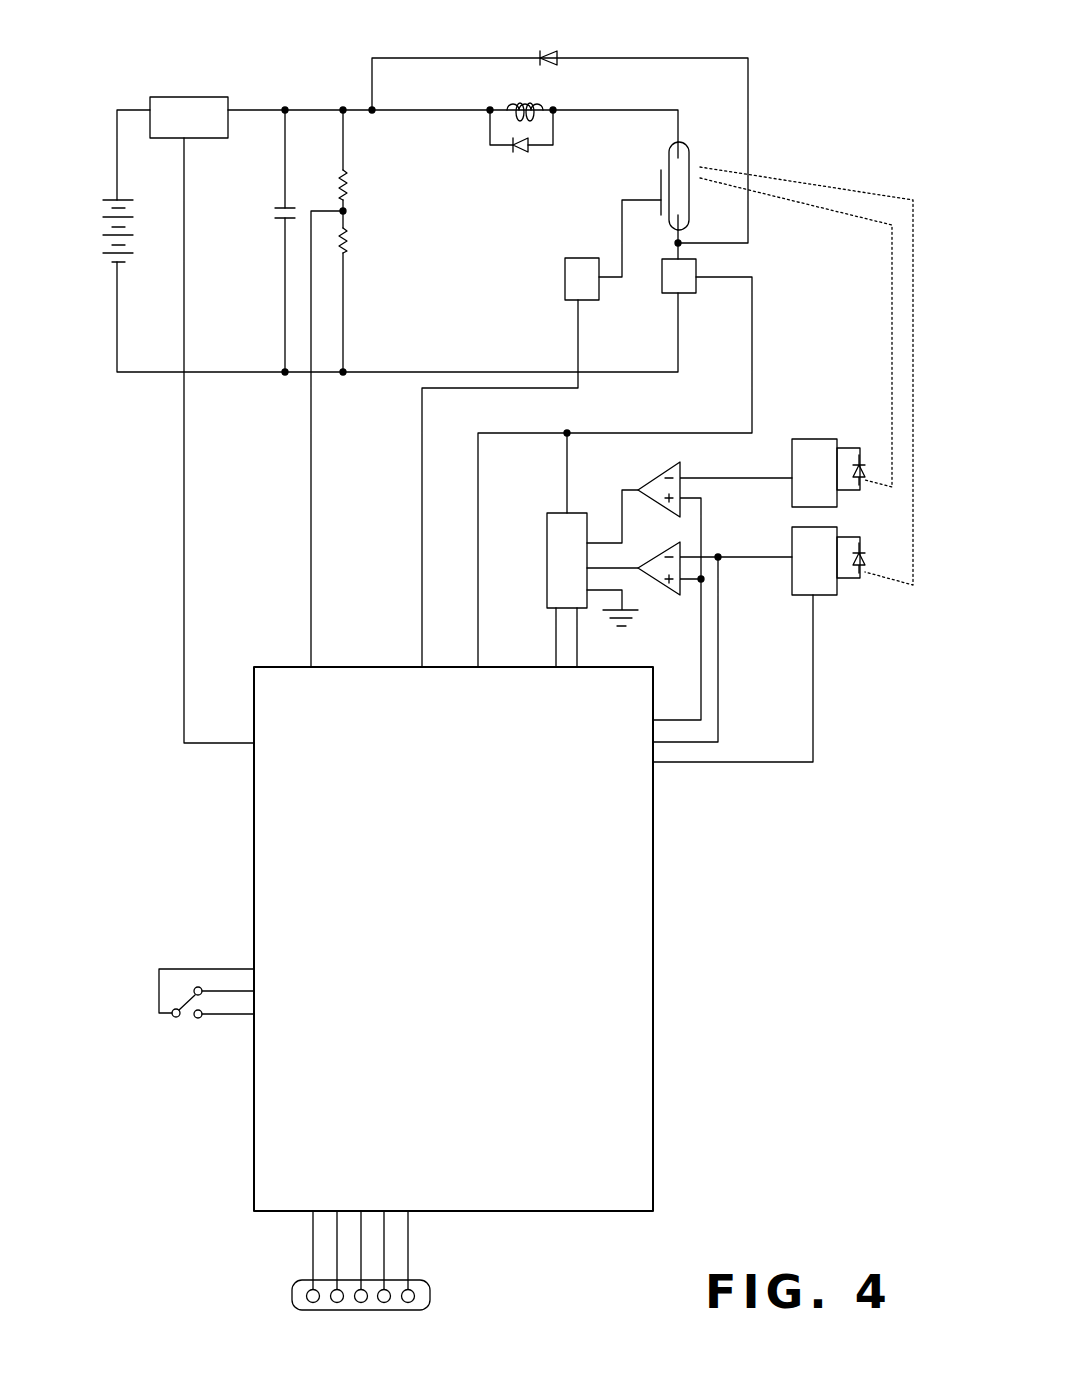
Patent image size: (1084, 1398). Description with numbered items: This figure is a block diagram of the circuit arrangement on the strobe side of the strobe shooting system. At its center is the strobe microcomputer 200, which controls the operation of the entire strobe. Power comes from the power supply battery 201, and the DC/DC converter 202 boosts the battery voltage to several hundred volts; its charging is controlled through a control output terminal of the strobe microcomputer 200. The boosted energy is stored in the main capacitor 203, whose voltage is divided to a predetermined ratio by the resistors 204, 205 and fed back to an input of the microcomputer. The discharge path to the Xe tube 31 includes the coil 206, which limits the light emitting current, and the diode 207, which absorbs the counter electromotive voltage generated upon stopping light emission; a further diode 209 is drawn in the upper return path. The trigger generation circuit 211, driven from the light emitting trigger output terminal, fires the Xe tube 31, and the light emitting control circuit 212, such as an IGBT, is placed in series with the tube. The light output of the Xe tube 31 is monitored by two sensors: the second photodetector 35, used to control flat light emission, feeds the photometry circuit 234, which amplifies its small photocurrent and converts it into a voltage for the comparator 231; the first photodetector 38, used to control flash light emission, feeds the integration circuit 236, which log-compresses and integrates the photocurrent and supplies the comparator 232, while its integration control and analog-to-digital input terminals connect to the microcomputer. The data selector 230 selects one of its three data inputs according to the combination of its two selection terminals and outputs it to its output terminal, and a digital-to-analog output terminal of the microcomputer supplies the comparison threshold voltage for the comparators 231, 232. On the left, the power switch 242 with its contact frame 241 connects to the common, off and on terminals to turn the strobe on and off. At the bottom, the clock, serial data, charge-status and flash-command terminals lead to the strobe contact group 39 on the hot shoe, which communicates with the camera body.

The strobe microcomputer 200 is at (653, 930).
The power supply battery 201 is at (130, 265).
The DC/DC converter 202 is at (191, 97).
The main capacitor 203 is at (282, 226).
The resistor 204 is at (352, 180).
The resistor 205 is at (352, 241).
The coil 206 is at (545, 103).
The diode 207 is at (522, 156).
The diode 209 is at (550, 52).
The Xe tube 31 is at (690, 140).
The trigger generation circuit 211 is at (590, 300).
The light emitting control circuit 212 is at (690, 295).
The data selector 230 is at (550, 513).
The comparator 231 is at (640, 470).
The comparator 232 is at (657, 595).
The photometry circuit 234 is at (818, 439).
The integration circuit 236 is at (822, 598).
The second photodetector 35 is at (865, 485).
The first photodetector 38 is at (865, 575).
The main switch 241 is at (165, 962).
The power switch 242 is at (188, 1020).
The strobe contact group 39 is at (430, 1295).